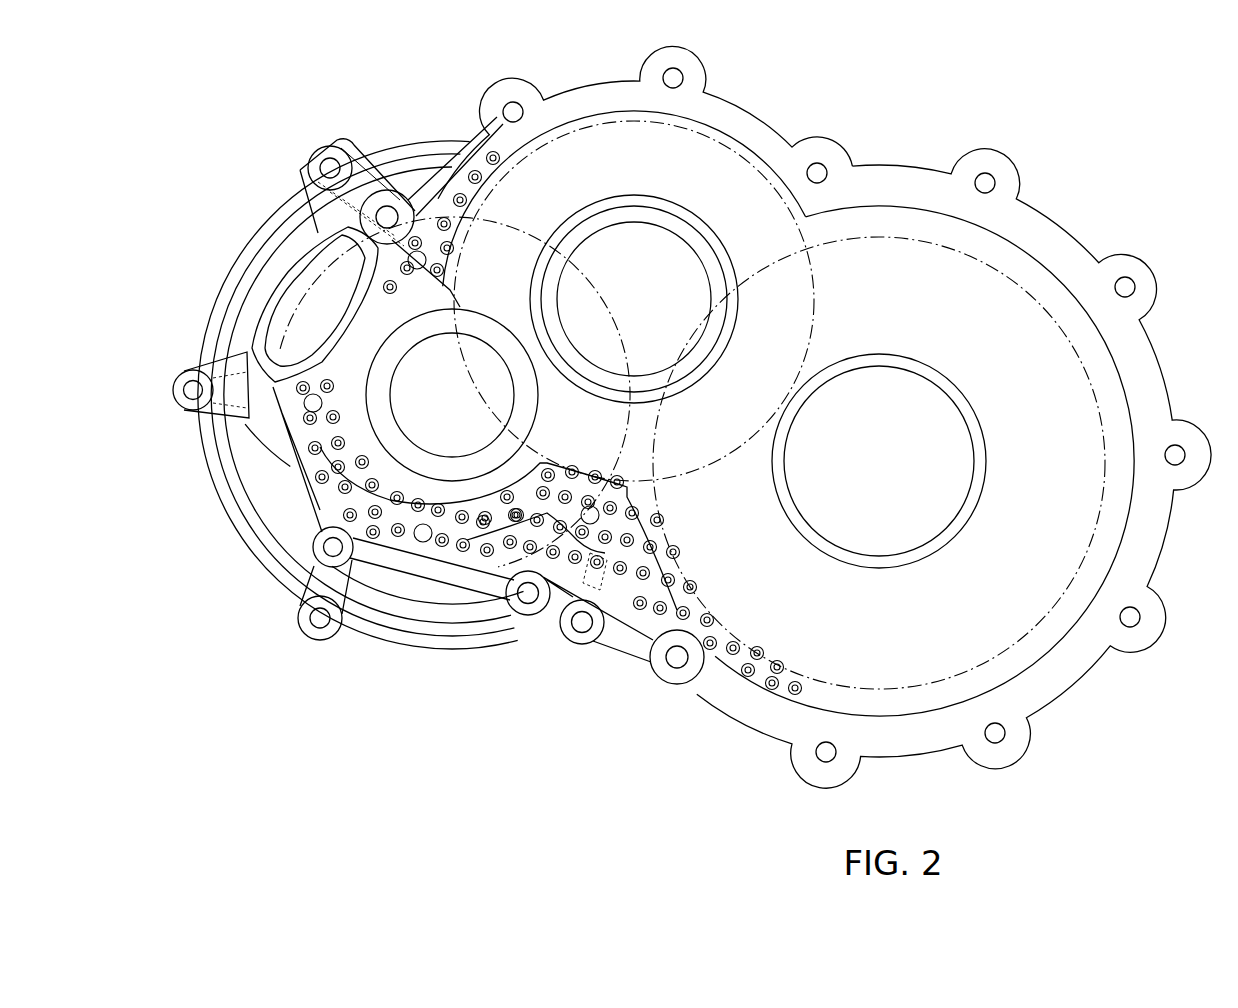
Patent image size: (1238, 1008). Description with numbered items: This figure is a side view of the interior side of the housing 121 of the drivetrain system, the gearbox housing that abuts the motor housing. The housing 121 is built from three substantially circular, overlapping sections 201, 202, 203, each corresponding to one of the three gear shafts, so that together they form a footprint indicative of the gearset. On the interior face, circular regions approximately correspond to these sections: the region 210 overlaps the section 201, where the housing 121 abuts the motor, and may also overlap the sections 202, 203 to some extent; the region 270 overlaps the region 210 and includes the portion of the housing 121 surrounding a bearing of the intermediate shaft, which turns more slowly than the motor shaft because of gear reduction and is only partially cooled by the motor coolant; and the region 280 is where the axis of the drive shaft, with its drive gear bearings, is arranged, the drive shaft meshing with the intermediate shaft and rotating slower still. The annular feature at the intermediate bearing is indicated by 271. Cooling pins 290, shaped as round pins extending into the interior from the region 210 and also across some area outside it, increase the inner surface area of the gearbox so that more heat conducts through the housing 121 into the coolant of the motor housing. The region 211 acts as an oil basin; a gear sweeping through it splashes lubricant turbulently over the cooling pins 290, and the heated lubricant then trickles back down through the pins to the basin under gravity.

The housing 121 is at (142, 113).
The section 201 is at (255, 215).
The section 202 is at (592, 75).
The section 203 is at (1045, 200).
The region 210 is at (432, 408).
The region 211 is at (845, 695).
The region 270 is at (620, 165).
The bearing seat 271 is at (694, 244).
The region 280 is at (965, 338).
The cooling pins 290 is at (296, 480).